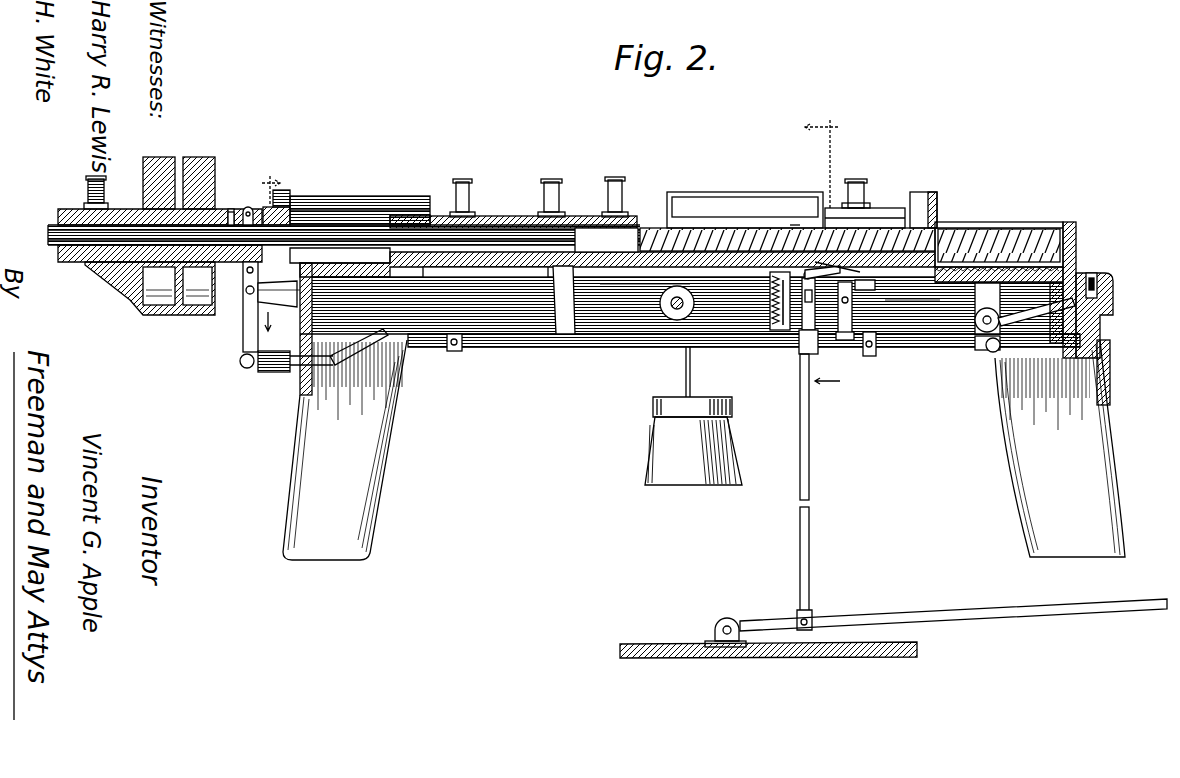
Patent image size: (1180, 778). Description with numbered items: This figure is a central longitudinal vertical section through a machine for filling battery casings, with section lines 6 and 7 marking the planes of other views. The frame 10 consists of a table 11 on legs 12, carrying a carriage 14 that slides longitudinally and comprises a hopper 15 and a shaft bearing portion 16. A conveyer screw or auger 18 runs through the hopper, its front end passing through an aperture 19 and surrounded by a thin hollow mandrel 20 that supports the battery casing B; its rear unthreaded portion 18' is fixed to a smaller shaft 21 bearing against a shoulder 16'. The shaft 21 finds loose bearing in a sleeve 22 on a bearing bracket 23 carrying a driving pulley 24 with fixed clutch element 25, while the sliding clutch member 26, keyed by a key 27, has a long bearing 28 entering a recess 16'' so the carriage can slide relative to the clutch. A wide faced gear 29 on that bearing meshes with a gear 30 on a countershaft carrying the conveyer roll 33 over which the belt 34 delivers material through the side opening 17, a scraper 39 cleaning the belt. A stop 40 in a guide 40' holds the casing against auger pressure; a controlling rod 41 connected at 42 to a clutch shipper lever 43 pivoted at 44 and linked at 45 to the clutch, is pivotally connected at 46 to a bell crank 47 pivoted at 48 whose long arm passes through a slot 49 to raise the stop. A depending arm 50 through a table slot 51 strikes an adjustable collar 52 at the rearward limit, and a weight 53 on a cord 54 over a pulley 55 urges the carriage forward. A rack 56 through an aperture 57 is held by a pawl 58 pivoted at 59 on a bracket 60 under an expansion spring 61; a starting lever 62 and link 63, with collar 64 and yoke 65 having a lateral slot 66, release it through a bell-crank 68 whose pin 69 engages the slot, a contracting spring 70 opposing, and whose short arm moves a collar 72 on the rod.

The section line 6— 6 is at (822, 156).
The section line 7— 7 is at (267, 186).
The frame 10 is at (450, 280).
The platform or table 11 is at (442, 276).
The legs 12 is at (378, 496).
The carriage 14 is at (554, 269).
The hopper 15 is at (643, 232).
The shaft bearing portion 16 is at (527, 186).
The shoulder 16' is at (606, 186).
The recess 16'' is at (465, 180).
The opening 17 is at (914, 198).
The conveyer screw (auger) 18 is at (775, 201).
The unthreaded portion 18' is at (695, 196).
The aperture 19 is at (944, 230).
The hollow mandrel 20 is at (964, 228).
The shaft 21 is at (422, 238).
The sleeve 22 is at (80, 208).
The bearing bracket 23 is at (112, 275).
The driving pulley 24 is at (199, 158).
The clutch element 25 is at (231, 210).
The clutch member 26 is at (248, 208).
The key 27 is at (332, 212).
The long bearing (sleeve) 28 is at (370, 225).
The wide faced gear wheel 29 is at (277, 247).
The gear wheel 30 is at (284, 190).
The conveyer roll 33 is at (826, 207).
The belt 34 is at (742, 192).
The scraper 39 is at (890, 225).
The stop or abutment 40 is at (1090, 290).
The guide 40' is at (1120, 315).
The controlling rod 41 is at (642, 343).
The connection 42 is at (246, 368).
The clutch shipper lever 43 is at (271, 307).
The pivot 44 is at (243, 302).
The pivotal connection 45 is at (248, 273).
The pivotal connection 46 is at (990, 352).
The bell crank lever 47 is at (1032, 314).
The pivot 48 is at (975, 320).
The slot 49 is at (1050, 322).
The depending arm 50 is at (632, 297).
The slot 51 is at (482, 270).
The adjustable collar 52 is at (462, 350).
The weight 53 is at (735, 402).
The cord 54 is at (696, 390).
The pulley 55 is at (690, 301).
The rack 56 is at (862, 274).
The aperture 57 is at (876, 284).
The pawl 58 is at (842, 272).
The pivot 59 is at (796, 209).
The bracket 60 is at (898, 330).
The expansion spring 61 is at (772, 301).
The starting lever 62 is at (926, 614).
The link 63 is at (809, 432).
The collar 64 is at (838, 391).
The yoke 65 is at (817, 350).
The lateral slot 66 is at (768, 318).
The bell-crank lever 68 is at (854, 318).
The lateral pin 69 is at (800, 330).
The contracting coil spring 70 is at (770, 318).
The collar 72 is at (871, 356).
The battery casing B is at (1046, 222).